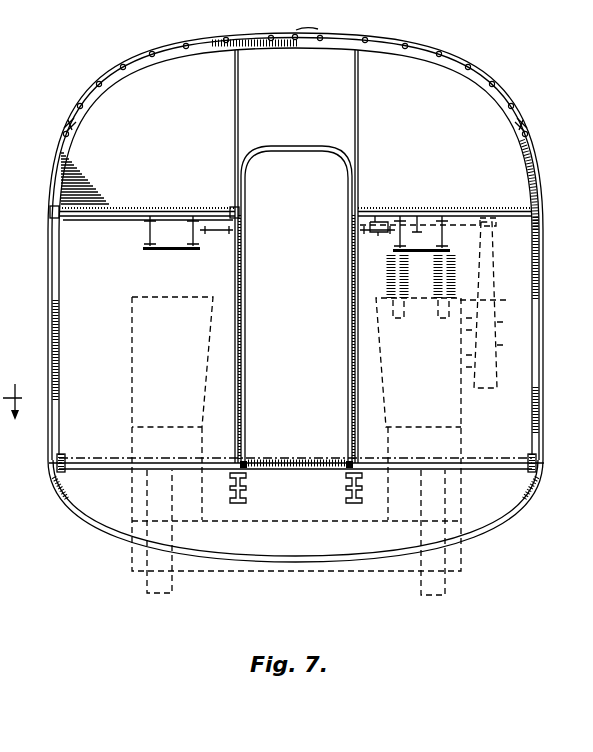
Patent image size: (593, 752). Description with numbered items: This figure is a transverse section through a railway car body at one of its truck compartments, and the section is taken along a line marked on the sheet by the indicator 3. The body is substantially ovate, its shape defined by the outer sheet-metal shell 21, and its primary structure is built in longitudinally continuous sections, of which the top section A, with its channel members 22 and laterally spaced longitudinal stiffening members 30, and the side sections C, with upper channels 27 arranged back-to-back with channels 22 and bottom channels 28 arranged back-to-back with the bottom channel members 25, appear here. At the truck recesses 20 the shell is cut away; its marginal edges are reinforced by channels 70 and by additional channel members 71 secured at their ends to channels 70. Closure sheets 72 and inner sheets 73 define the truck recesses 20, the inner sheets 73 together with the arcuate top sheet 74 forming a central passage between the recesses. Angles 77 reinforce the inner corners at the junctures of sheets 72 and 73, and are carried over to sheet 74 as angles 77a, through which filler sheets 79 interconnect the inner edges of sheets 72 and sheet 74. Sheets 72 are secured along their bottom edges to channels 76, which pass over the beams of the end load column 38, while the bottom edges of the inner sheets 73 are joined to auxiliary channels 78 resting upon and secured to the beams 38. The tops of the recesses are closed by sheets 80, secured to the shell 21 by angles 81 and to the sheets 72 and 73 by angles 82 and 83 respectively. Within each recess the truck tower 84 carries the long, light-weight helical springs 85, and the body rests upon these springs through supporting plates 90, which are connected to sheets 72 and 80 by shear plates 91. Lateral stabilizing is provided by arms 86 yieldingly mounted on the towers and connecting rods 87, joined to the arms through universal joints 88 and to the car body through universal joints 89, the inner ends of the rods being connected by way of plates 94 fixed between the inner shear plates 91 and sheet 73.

The top section A is at (468, 64).
The side section C is at (549, 326).
The section line indicator 3 is at (12, 394).
The truck compartment 20 is at (80, 306).
The outer sheet-metal shell 21 is at (216, 40).
The channel member 22 is at (70, 114).
The channel member 25 is at (58, 475).
The upper channel 27 is at (58, 141).
The bottom channel 28 is at (60, 450).
The longitudinal stiffening member 30 is at (300, 30).
The end load column 38 is at (228, 500).
The channel 70 is at (68, 501).
The channel member 71 is at (309, 560).
The closure sheet 72 is at (372, 580).
The inner sheet 73 is at (243, 330).
The top sheet 74 is at (300, 146).
The channel 76 is at (293, 460).
The angle 77 is at (243, 364).
The angle 77a is at (264, 146).
The auxiliary channel 78 is at (245, 460).
The filler sheet 79 is at (296, 129).
The sheet 80 is at (112, 207).
The angle 81 is at (50, 212).
The angle 82 is at (88, 218).
The angle 83 is at (240, 212).
The tower 84 is at (131, 386).
The helical spring 85 is at (440, 290).
The arm 86 is at (498, 300).
The connecting rod 87 is at (417, 218).
The universal joint 88 is at (490, 218).
The universal joint 89 is at (378, 220).
The supporting plate 90 is at (172, 250).
The shear plate 91 is at (453, 236).
The plate 94 is at (212, 233).